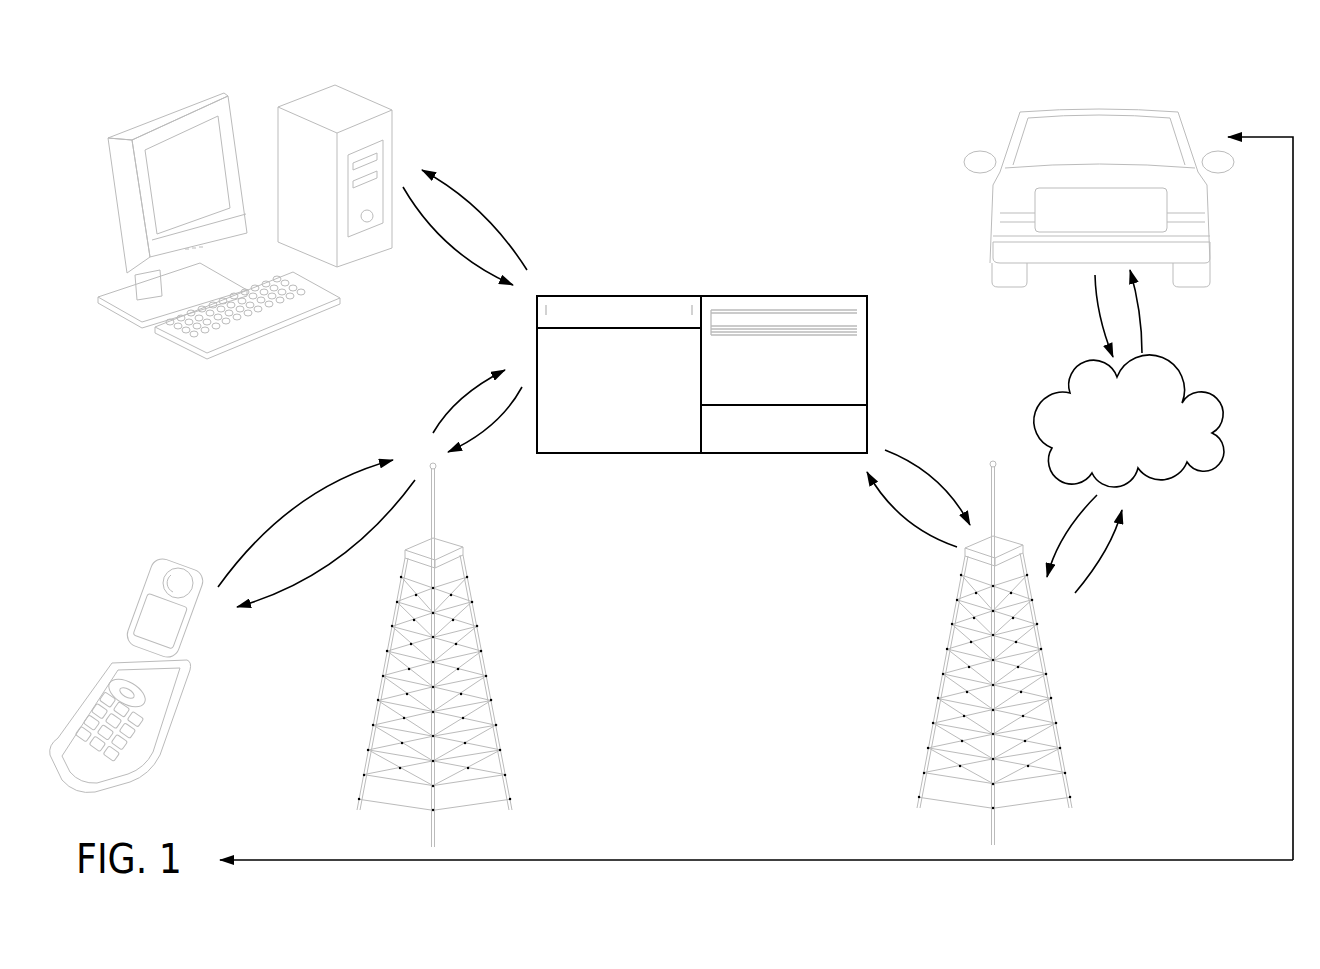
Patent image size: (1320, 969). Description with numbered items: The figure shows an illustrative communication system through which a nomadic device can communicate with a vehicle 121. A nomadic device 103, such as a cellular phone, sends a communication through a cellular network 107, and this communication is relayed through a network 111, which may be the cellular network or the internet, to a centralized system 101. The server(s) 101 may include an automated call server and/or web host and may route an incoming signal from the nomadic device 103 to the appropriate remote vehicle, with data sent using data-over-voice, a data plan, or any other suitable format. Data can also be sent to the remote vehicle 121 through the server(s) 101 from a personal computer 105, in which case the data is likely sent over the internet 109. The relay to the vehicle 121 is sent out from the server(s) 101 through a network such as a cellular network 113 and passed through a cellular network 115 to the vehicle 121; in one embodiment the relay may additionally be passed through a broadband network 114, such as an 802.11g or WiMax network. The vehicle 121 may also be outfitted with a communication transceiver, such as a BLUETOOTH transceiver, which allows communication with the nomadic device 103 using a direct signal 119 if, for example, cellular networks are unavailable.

The centralized system 101 is at (619, 455).
The nomadic device 103 is at (150, 583).
The personal computer 105 is at (160, 118).
The cellular network 107 is at (298, 505).
The internet 109 is at (483, 208).
The network 111 is at (458, 398).
The cellular network 113 is at (907, 517).
The broadband network 114 is at (1180, 380).
The cellular network 115 is at (1142, 307).
The direct signal 119 is at (738, 858).
The vehicle 121 is at (1087, 110).